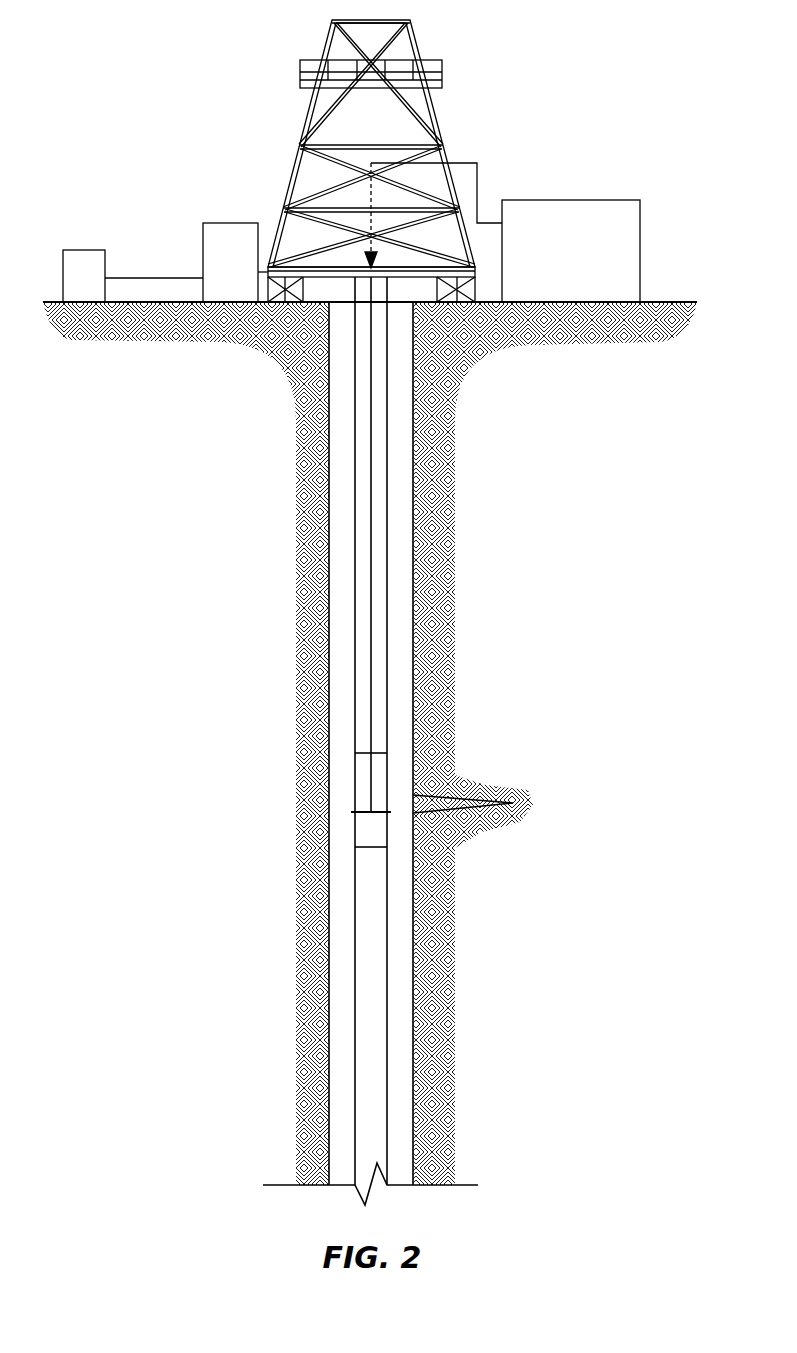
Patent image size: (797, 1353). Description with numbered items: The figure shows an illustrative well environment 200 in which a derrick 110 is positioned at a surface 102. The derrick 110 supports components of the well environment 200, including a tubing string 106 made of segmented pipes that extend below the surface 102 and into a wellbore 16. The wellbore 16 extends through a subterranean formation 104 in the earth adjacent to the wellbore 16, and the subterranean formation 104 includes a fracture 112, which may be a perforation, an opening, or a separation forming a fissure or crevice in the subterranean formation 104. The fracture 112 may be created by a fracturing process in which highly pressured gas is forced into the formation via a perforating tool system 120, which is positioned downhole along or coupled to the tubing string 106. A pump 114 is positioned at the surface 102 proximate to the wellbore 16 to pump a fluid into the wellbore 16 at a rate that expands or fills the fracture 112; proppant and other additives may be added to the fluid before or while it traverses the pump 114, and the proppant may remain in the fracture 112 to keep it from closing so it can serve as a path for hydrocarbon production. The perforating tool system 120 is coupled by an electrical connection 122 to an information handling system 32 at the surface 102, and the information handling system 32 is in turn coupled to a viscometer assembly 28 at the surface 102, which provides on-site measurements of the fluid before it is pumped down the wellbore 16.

The well environment 200 is at (136, 56).
The derrick 110 is at (303, 125).
The pump 114 is at (603, 200).
The surface 102 is at (668, 302).
The information handling system 32 is at (203, 262).
The viscometer assembly 28 is at (97, 292).
The subterranean formation 104 is at (437, 393).
The wellbore 16 is at (413, 740).
The electrical connection 122 is at (371, 403).
The tubing string 106 is at (353, 490).
The fracture 112 is at (505, 803).
The perforating tool system 120 is at (370, 838).